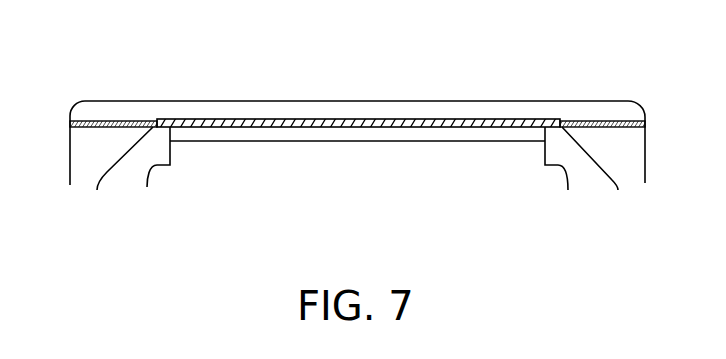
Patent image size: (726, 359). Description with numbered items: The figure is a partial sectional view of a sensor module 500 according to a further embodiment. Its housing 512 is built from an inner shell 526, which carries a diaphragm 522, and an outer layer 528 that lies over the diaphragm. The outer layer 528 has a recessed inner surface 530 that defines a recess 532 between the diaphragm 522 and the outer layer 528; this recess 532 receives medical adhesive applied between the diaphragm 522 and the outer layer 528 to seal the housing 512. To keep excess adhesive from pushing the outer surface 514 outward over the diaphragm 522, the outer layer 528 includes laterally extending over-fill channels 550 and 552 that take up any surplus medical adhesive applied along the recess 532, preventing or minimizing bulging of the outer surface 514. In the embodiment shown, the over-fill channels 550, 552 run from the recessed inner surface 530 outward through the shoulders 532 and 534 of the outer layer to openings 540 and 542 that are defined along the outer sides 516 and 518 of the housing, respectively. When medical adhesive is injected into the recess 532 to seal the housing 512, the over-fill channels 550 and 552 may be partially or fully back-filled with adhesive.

The sensor module 500 is at (371, 71).
The housing 512 is at (50, 188).
The outer surface 514 is at (478, 100).
The outer side 516 is at (70, 128).
The outer side 518 is at (650, 143).
The diaphragm 522 is at (478, 143).
The inner shell 526 is at (140, 172).
The outer layer 528 is at (458, 108).
The recessed inner surface 530 is at (270, 127).
The recess 532 is at (107, 100).
The shoulder 534 is at (617, 108).
The opening 540 is at (70, 127).
The opening 542 is at (646, 126).
The over-fill channel 550 is at (122, 120).
The over-fill channel 552 is at (583, 120).